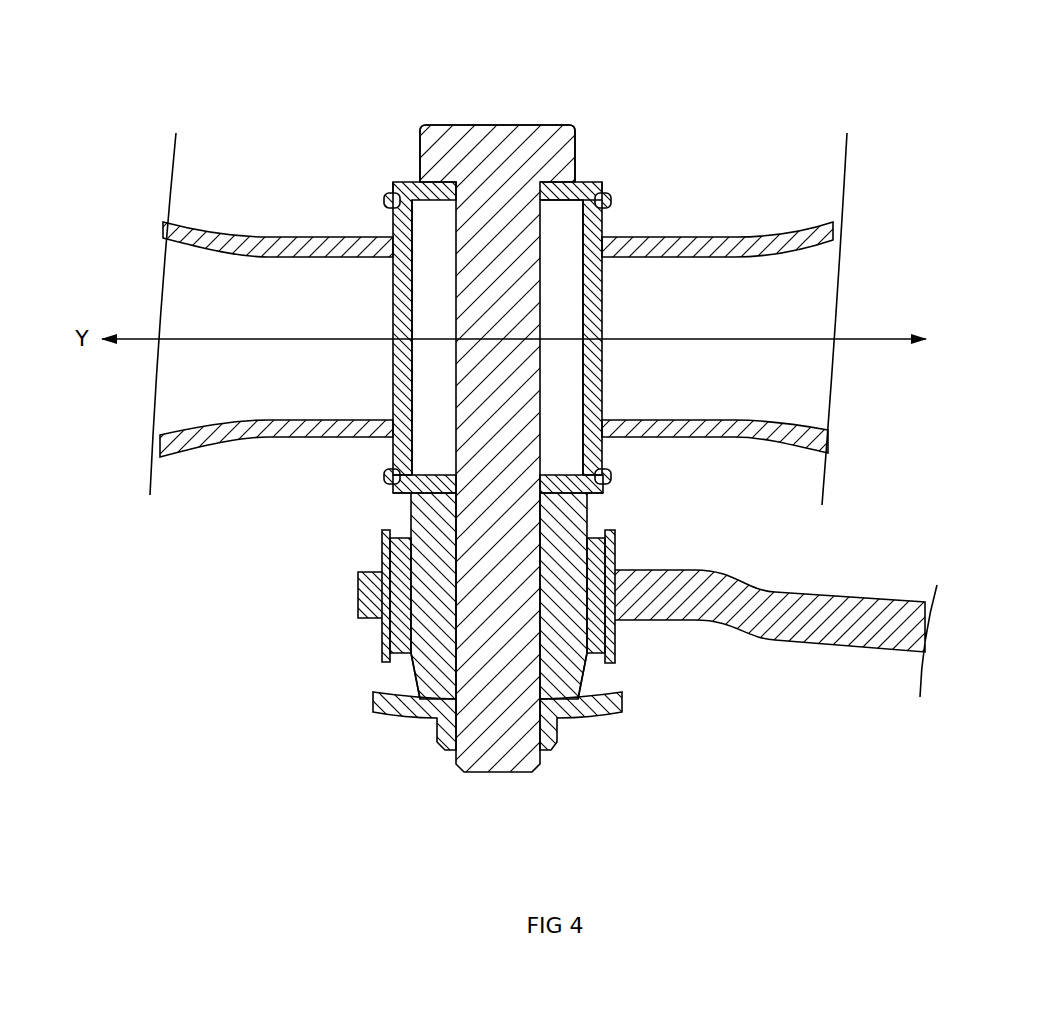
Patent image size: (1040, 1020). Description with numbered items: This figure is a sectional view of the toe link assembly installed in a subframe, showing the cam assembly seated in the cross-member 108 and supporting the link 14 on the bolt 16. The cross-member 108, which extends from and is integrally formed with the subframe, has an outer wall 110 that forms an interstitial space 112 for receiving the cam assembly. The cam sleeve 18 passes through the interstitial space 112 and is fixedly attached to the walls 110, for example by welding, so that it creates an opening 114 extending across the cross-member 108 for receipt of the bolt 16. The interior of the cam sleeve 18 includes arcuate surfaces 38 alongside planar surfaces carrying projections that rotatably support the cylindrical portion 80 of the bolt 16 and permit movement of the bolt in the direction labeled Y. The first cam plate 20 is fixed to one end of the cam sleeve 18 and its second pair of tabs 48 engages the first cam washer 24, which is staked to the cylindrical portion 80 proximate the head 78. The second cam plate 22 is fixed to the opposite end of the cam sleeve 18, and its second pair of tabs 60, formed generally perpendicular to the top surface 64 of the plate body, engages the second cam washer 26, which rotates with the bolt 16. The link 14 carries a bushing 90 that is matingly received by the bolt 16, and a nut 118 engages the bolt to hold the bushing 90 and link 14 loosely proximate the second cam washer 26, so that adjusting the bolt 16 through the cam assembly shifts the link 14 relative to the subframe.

The link 14 is at (886, 595).
The bolt 16 is at (488, 118).
The cam sleeve 18 is at (388, 313).
The first cam plate 20 is at (382, 190).
The second cam plate 22 is at (382, 483).
The first cam washer 24 is at (595, 180).
The second cam washer 26 is at (598, 508).
The arcuate surfaces 38 is at (405, 400).
The second pair of tabs 48 is at (390, 194).
The second pair of tabs 60 is at (392, 484).
The top surface 64 is at (403, 493).
The head 78 is at (543, 123).
The cylindrical portion 80 is at (541, 330).
The bushing 90 is at (588, 680).
The cross-member 108 is at (809, 220).
The outer wall 110 is at (750, 247).
The interstitial space 112 is at (810, 305).
The opening 114 is at (437, 462).
The nut 118 is at (623, 707).